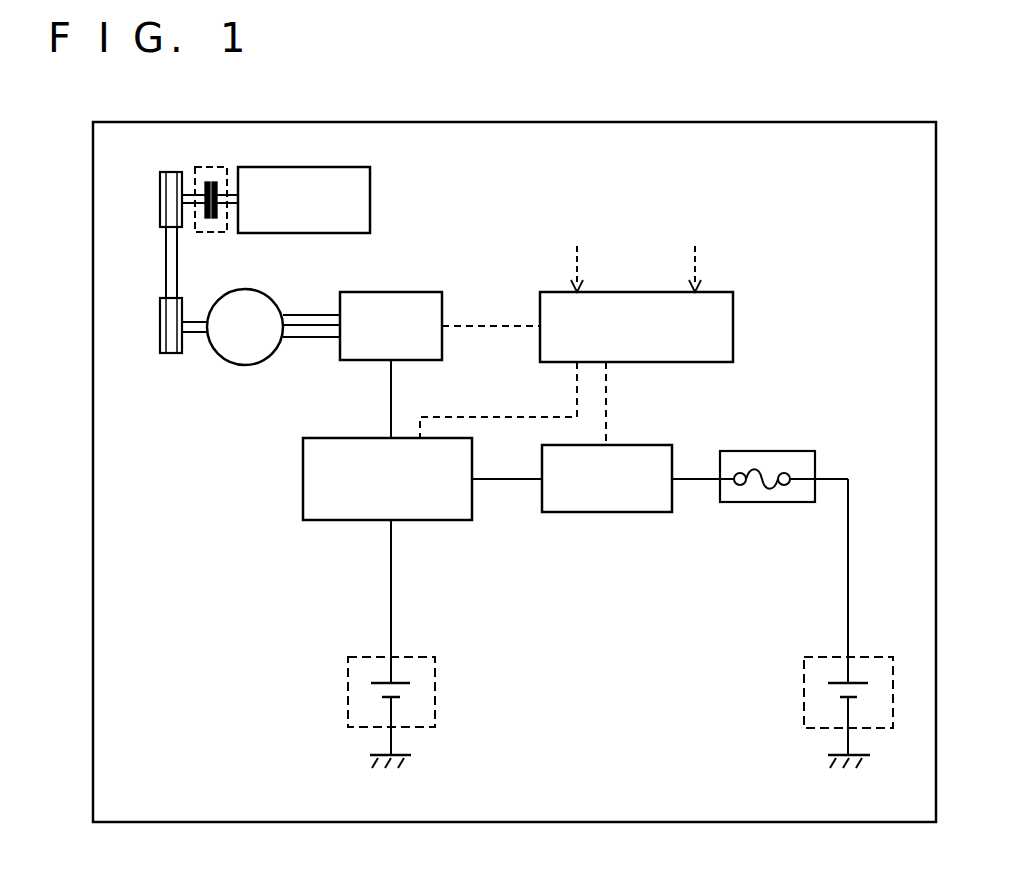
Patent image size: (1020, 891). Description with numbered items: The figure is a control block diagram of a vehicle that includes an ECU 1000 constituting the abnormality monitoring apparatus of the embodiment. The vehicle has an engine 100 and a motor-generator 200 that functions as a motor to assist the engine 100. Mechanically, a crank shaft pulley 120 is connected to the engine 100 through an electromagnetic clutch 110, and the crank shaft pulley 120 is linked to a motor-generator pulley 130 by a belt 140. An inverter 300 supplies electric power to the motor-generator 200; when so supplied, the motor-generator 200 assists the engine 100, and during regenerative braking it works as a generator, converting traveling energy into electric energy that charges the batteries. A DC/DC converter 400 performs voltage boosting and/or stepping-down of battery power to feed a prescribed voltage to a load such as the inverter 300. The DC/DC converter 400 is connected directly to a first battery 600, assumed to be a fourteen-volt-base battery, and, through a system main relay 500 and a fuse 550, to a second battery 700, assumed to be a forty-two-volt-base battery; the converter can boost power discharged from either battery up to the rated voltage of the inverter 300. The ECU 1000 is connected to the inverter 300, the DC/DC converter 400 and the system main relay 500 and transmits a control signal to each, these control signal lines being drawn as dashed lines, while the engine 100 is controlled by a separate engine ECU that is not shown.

The engine 100 is at (370, 201).
The electromagnetic clutch 110 is at (213, 166).
The crank shaft pulley 120 is at (160, 190).
The motor-generator pulley 130 is at (160, 330).
The belt 140 is at (173, 263).
The motor-generator 200 is at (243, 290).
The inverter 300 is at (382, 292).
The DC/DC converter 400 is at (360, 437).
The system main relay 500 is at (630, 445).
The fuse 550 is at (770, 451).
The first battery 600 is at (435, 672).
The second battery 700 is at (803, 673).
The ECU 1000 is at (733, 325).